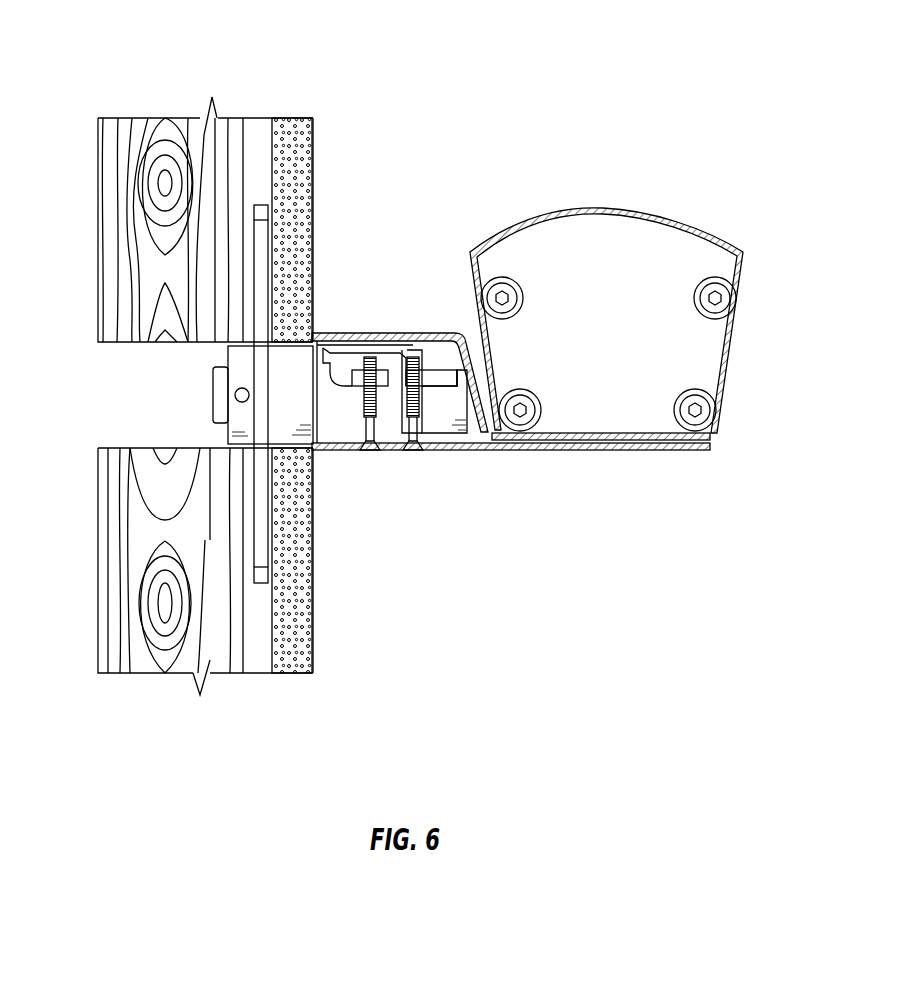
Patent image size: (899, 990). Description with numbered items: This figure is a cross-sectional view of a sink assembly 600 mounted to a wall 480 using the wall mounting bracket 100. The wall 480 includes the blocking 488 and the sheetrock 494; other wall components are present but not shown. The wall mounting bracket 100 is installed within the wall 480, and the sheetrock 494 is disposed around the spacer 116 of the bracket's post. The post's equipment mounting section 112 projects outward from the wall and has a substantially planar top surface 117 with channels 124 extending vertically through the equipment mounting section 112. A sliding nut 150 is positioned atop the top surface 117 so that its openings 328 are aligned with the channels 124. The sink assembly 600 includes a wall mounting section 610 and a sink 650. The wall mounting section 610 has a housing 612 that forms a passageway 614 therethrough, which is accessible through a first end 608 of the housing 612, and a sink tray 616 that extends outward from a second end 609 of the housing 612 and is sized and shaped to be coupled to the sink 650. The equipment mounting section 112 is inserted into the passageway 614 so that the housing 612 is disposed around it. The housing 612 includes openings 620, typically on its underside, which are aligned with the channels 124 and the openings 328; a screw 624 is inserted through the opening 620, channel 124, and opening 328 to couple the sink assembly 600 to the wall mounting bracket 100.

The wall 480 is at (251, 76).
The blocking 488 is at (120, 568).
The sheetrock 494 is at (303, 162).
The spacer 116 is at (285, 367).
The first end of the housing 608 is at (313, 452).
The sink tray 616 is at (683, 452).
The second end of the housing 609 is at (495, 447).
The passageway 614 is at (475, 438).
The openings 620 is at (428, 451).
The wall mounting section 610 is at (430, 365).
The equipment mounting section 112 is at (468, 402).
The top surface 117 is at (457, 372).
The openings 328 is at (365, 362).
The housing 612 is at (376, 334).
The sliding nut 150 is at (392, 355).
The channels 124 is at (378, 450).
The screw 624 is at (377, 452).
The wall mounting bracket 100 is at (337, 406).
The sink 650 is at (618, 207).
The sink assembly 600 is at (716, 208).